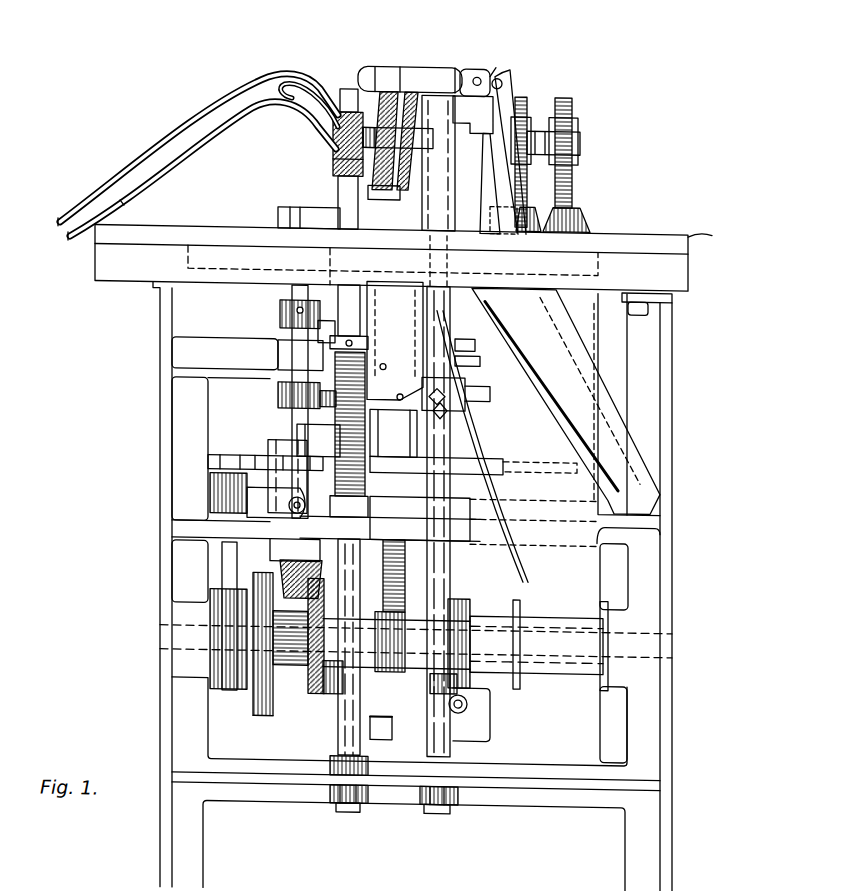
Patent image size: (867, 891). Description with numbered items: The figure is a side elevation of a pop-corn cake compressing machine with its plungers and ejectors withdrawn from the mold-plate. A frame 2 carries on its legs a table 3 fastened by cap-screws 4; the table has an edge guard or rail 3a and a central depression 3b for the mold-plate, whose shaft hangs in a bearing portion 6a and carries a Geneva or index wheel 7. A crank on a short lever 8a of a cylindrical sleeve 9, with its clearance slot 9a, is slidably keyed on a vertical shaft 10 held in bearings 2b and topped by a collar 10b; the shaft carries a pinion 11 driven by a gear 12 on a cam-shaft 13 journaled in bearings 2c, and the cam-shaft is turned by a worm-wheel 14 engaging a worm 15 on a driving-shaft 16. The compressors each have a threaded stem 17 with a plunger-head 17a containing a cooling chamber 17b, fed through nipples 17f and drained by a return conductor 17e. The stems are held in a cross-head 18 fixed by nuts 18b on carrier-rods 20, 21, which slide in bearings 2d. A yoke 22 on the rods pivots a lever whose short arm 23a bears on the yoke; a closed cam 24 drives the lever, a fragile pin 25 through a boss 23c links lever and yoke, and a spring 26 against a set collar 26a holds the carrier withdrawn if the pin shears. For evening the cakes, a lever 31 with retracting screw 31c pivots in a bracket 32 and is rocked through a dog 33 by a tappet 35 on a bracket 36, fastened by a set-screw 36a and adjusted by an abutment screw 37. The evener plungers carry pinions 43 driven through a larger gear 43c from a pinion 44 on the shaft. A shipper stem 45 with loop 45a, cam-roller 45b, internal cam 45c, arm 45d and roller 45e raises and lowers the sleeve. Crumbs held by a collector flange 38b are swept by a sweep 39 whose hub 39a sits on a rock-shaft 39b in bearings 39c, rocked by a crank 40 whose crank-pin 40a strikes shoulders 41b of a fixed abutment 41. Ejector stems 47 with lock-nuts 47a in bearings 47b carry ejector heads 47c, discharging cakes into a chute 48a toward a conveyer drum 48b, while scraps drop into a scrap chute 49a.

The frame 2 is at (160, 396).
The bearings 2b is at (295, 352).
The bearings 2c is at (195, 625).
The bearings 2d is at (425, 798).
The table 3 is at (678, 277).
The guard or rail 3a is at (714, 235).
The central recess or annular depression 3b is at (600, 268).
The cap-screws 4 is at (650, 306).
The bearing portion 6a is at (393, 433).
The Geneva or index wheel 7 is at (500, 470).
The short lever 8a is at (322, 458).
The cylindrical sleeve 9 is at (275, 450).
The clearance slot 9a is at (268, 463).
The vertical shaft 10 is at (292, 427).
The collar 10b is at (280, 308).
The pinion 11 is at (300, 582).
The gear 12 is at (310, 690).
The cam-shaft 13 is at (386, 635).
The worm-wheel 14 is at (525, 645).
The worm 15 is at (480, 724).
The driving-shaft 16 is at (468, 708).
The threaded stem 17 is at (330, 78).
The plunger-head 17a is at (333, 180).
The chamber 17b is at (283, 88).
The return conductor 17e is at (215, 168).
The nipples 17f is at (333, 165).
The cross-head 18 is at (340, 150).
The nuts 18b is at (457, 163).
The carrier-rod 20 is at (345, 813).
The carrier-rod 21 is at (436, 813).
The yoke 22 is at (460, 688).
The short arm 23a is at (330, 695).
The boss 23c is at (396, 722).
The internal or closed cam 24 is at (405, 580).
The fragile pin or yielding connection 25 is at (378, 740).
The spring 26 is at (349, 530).
The set collar 26a is at (318, 330).
The lever 31 is at (383, 362).
The retracting screw 31c is at (475, 342).
The bracket or bearing piece 32 is at (430, 268).
The dog 33 is at (440, 402).
The tappet 35 is at (480, 360).
The arm or bracket 36 is at (490, 392).
The set-screw 36a is at (450, 410).
The adjusting abutment screw 37 is at (468, 418).
The rear upwardly extending flange 38b is at (278, 216).
The sweep 39 is at (398, 138).
The hub 39a is at (410, 68).
The rock-shaft 39b is at (476, 68).
The bearings 39c is at (372, 68).
The crank 40 is at (503, 84).
The crank-pin 40a is at (500, 70).
The fixed abutment member 41 is at (530, 185).
The abutment shoulders 41b is at (512, 70).
The pinion 43 is at (345, 285).
The larger gear 43c is at (322, 408).
The pinion 44 is at (278, 393).
The shipper stem 45 is at (222, 580).
The yoke or loop 45a is at (215, 664).
The cam-roller 45b is at (262, 620).
The internal slotted cam 45c is at (265, 718).
The horizontally projecting arm 45d is at (240, 500).
The roller 45e is at (295, 510).
The ejector stem 47 is at (560, 130).
The lock-nuts 47a is at (573, 125).
The bearings 47b is at (578, 142).
The ejector heads 47c is at (525, 232).
The chute 48a is at (590, 564).
The driving drum 48b is at (600, 687).
The scrap chute 49a is at (612, 458).